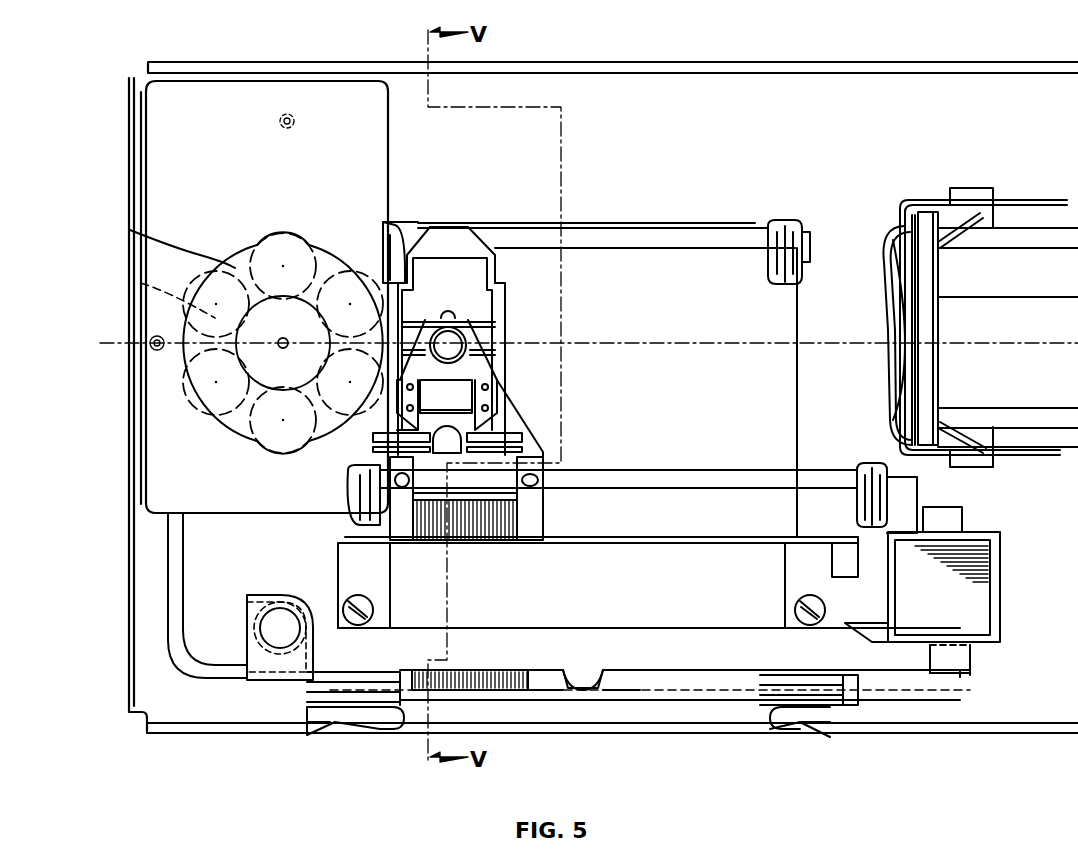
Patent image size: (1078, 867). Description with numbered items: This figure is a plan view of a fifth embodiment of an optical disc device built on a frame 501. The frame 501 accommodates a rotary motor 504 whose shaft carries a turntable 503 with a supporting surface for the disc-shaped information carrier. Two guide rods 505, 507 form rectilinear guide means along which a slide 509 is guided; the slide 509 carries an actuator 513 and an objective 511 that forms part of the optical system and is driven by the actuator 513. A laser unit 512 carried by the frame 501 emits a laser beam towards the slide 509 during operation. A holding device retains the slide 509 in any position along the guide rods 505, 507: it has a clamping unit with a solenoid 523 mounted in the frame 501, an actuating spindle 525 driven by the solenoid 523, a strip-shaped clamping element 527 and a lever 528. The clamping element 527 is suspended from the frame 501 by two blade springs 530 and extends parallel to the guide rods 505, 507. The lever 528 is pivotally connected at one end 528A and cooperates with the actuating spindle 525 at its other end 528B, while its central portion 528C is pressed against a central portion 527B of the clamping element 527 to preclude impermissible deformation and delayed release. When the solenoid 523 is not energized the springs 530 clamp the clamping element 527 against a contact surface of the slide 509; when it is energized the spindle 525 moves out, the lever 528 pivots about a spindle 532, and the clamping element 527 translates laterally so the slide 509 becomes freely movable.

The frame 501 is at (194, 730).
The turntable 503 is at (220, 263).
The rotary motor 504 is at (213, 320).
The guide rod 505 is at (714, 478).
The guide rod 507 is at (667, 240).
The slide 509 is at (517, 416).
The objective 511 is at (457, 337).
The laser unit 512 is at (1022, 282).
The actuator 513 is at (484, 395).
The solenoid 523 is at (968, 608).
The actuating spindle 525 is at (950, 662).
The clamping element 527 is at (856, 705).
The central portion of the clamping element 527B is at (582, 692).
The lever 528 is at (547, 652).
The end of the lever 528A is at (250, 658).
The end of the lever 528B is at (960, 676).
The central portion of the lever 528C is at (578, 685).
The blade spring 530 is at (386, 733).
The spindle 532 is at (284, 615).